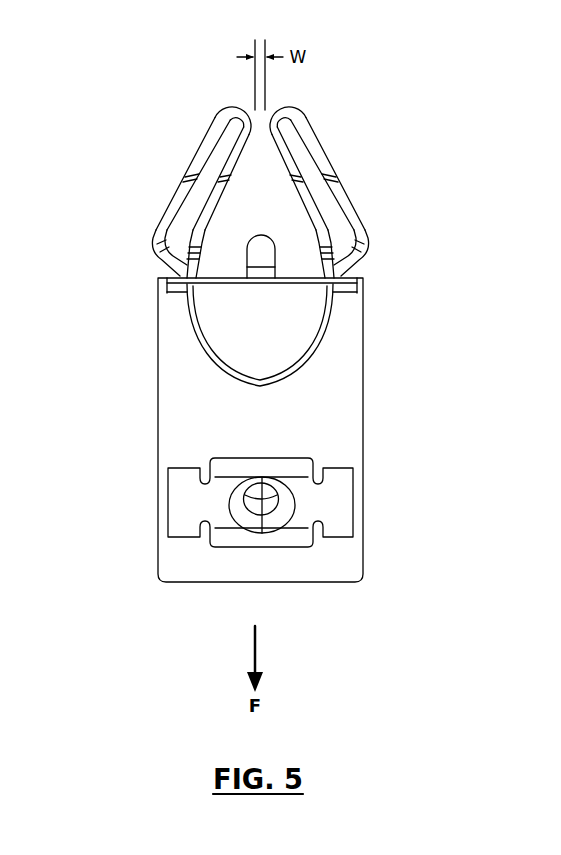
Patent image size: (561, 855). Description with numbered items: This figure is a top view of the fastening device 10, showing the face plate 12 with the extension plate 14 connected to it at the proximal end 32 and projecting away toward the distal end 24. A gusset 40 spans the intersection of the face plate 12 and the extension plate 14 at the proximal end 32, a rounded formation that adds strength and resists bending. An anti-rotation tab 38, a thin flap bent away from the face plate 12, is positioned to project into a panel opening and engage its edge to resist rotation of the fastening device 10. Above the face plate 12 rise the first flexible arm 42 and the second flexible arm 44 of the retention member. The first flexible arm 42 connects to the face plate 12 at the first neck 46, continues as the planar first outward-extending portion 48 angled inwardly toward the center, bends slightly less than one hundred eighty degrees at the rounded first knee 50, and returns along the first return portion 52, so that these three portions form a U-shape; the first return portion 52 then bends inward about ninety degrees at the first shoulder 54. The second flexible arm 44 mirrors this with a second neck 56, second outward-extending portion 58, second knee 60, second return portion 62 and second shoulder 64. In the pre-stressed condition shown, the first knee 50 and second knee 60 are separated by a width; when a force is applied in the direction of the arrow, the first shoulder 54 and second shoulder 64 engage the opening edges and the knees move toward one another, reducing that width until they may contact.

The fastening device 10 is at (442, 216).
The face plate 12 is at (170, 283).
The extension plate 14 is at (193, 428).
The distal end 24 is at (260, 567).
The proximal end 32 is at (175, 297).
The anti-rotation tab 38 is at (264, 252).
The gusset 40 is at (263, 350).
The first flexible arm 42 is at (174, 181).
The second flexible arm 44 is at (339, 188).
The first neck 46 is at (187, 272).
The first outward-extending portion 48 is at (226, 178).
The first knee 50 is at (244, 105).
The first return portion 52 is at (188, 182).
The first shoulder 54 is at (167, 261).
The second neck 56 is at (333, 274).
The second outward-extending portion 58 is at (306, 200).
The second knee 60 is at (274, 108).
The second return portion 62 is at (336, 186).
The second shoulder 64 is at (352, 260).